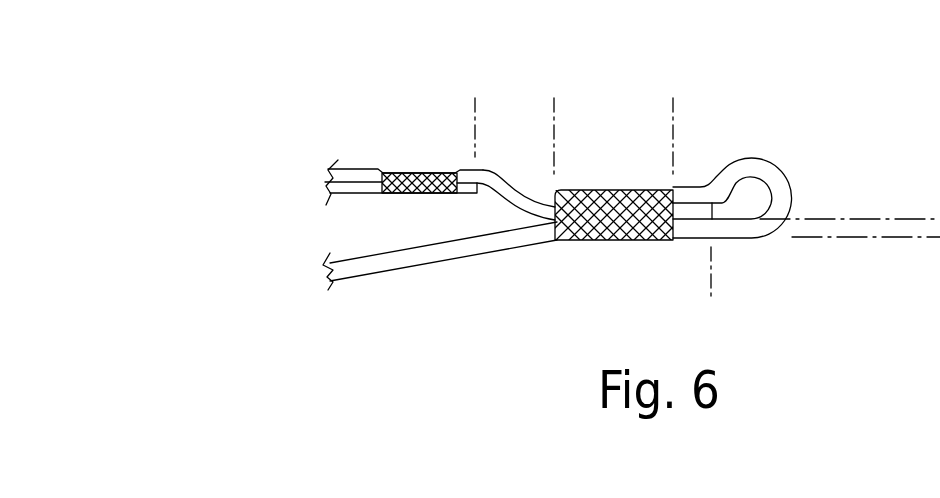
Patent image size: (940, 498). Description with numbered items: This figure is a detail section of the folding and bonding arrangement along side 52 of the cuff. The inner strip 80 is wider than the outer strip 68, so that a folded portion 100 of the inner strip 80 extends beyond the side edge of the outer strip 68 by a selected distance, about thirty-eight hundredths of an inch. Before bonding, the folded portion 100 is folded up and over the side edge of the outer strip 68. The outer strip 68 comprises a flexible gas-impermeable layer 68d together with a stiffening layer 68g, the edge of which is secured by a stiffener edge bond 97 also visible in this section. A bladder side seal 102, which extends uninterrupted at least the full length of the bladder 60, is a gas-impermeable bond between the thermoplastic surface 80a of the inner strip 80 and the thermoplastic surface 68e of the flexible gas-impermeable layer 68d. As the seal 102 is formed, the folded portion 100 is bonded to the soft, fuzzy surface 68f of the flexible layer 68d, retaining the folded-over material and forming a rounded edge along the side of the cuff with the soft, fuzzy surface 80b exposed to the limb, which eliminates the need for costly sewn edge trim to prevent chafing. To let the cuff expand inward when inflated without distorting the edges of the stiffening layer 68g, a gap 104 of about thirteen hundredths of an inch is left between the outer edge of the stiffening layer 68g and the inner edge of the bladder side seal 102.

The side of the cuff 52 is at (799, 139).
The bladder 60 is at (417, 223).
The outer strip 68 is at (178, 92).
The flexible gas-impermeable layer 68d is at (338, 166).
The thermoplastic surface 68e is at (498, 207).
The soft, fuzzy surface 68f is at (456, 158).
The stiffening layer 68g is at (328, 185).
The inner strip 80 is at (433, 257).
The thermoplastic surface 80a is at (348, 251).
The soft, fuzzy surface 80b is at (352, 291).
The stiffener edge bond 97 is at (443, 156).
The folded portion 100 is at (708, 305).
The bladder side seal 102 is at (673, 92).
The gap 104 is at (553, 92).